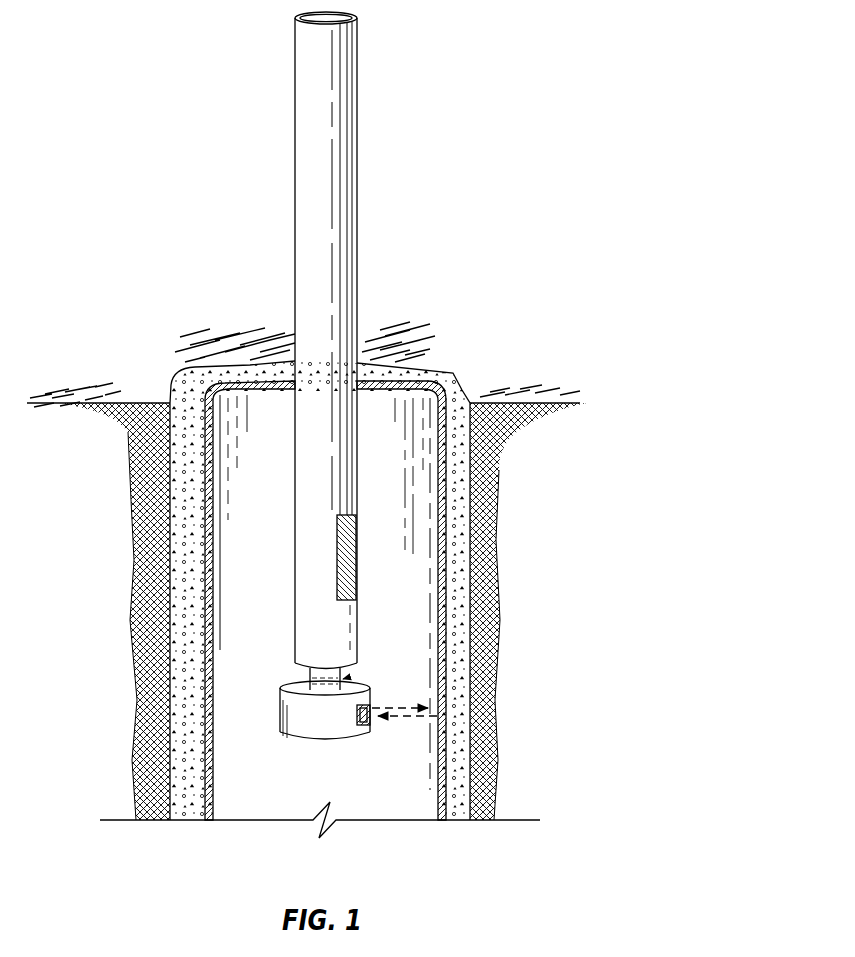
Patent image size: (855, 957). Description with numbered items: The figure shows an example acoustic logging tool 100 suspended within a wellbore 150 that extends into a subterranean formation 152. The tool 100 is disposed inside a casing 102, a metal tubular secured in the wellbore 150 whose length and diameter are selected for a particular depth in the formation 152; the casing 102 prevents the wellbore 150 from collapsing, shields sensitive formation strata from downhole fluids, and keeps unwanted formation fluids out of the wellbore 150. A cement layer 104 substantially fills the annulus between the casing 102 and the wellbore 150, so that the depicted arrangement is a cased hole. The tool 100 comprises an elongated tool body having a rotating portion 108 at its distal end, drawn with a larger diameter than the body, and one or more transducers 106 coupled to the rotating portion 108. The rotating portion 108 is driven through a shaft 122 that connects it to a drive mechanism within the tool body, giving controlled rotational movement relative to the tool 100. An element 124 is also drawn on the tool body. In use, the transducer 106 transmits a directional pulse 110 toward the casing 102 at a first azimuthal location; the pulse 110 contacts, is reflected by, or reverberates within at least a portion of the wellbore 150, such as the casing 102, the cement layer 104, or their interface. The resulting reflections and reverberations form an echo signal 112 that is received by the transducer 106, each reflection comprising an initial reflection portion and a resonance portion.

The acoustic logging tool 100 is at (508, 172).
The casing 102 is at (268, 385).
The cement layer 104 is at (466, 496).
The transducer 106 is at (357, 722).
The rotating portion 108 is at (287, 722).
The directional pulse 110 is at (413, 706).
The echo signal 112 is at (410, 719).
The shaft 122 is at (312, 680).
The marker 124 is at (352, 552).
The wellbore 150 is at (190, 561).
The subterranean formation 152 is at (497, 573).